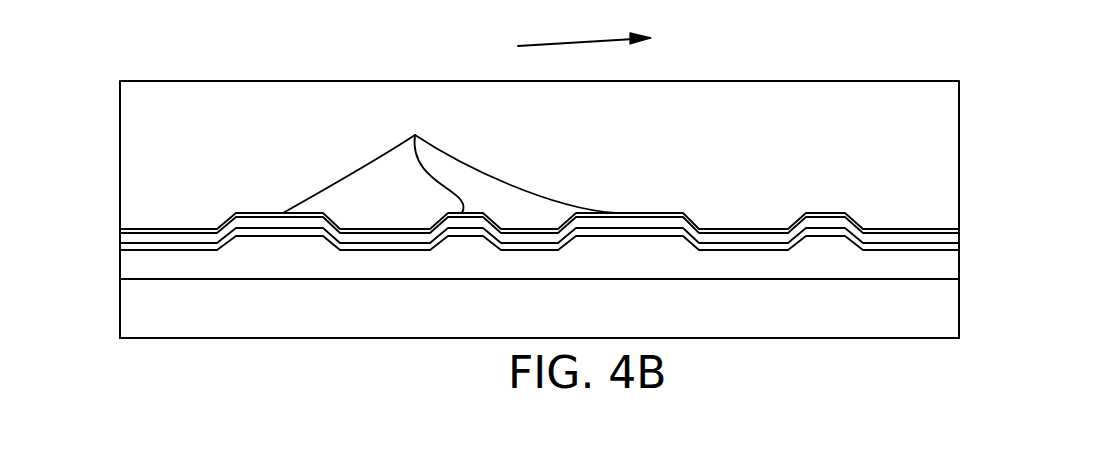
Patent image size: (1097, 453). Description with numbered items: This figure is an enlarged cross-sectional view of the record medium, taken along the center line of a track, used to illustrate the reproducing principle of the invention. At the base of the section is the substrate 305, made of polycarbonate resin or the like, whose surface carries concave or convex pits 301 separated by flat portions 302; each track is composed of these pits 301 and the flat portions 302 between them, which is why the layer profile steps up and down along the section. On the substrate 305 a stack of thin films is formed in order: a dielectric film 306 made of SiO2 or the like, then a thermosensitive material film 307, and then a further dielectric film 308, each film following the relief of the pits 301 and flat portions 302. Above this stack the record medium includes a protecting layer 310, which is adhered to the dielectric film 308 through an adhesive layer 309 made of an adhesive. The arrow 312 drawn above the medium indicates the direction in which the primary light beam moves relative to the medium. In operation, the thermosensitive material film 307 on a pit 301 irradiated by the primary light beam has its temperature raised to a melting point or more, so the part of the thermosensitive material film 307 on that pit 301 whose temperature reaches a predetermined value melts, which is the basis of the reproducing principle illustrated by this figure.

The pit 301 is at (832, 178).
The flat portion 302 is at (737, 228).
The substrate 305 is at (960, 142).
The dielectric film 306 is at (958, 229).
The thermosensitive material film 307 is at (960, 237).
The dielectric film 308 is at (960, 246).
The adhesive layer 309 is at (942, 270).
The protecting layer 310 is at (960, 329).
The arrow 312 is at (657, 36).